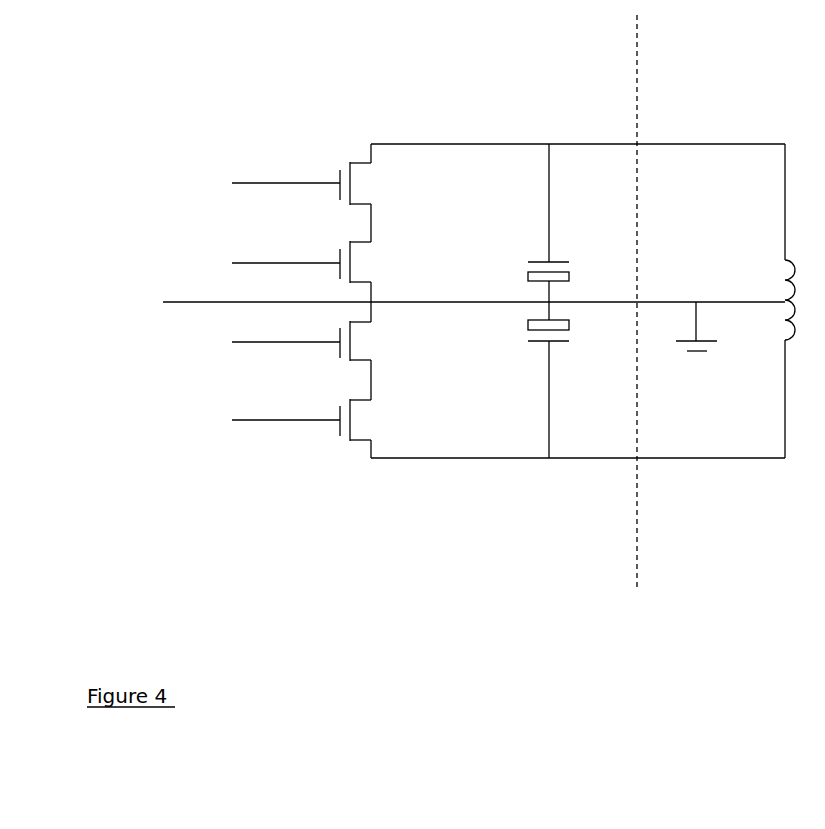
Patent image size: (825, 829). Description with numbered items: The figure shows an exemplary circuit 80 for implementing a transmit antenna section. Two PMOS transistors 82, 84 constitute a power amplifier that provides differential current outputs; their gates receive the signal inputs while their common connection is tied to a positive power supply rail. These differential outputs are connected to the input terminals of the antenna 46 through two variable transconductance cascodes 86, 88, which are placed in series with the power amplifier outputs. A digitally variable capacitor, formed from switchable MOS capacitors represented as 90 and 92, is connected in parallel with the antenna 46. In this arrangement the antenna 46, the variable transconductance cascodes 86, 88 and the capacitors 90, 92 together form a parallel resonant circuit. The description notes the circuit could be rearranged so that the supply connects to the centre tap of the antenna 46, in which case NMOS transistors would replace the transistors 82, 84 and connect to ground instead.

The exemplary circuit 80 is at (378, 88).
The variable transconductance cascode 86 is at (402, 193).
The PMOS transistor 82 is at (402, 273).
The PMOS transistor 84 is at (402, 352).
The variable transconductance cascode 88 is at (402, 430).
The switchable MOS capacitor 90 is at (569, 271).
The switchable MOS capacitor 92 is at (569, 330).
The antenna 46 is at (783, 271).